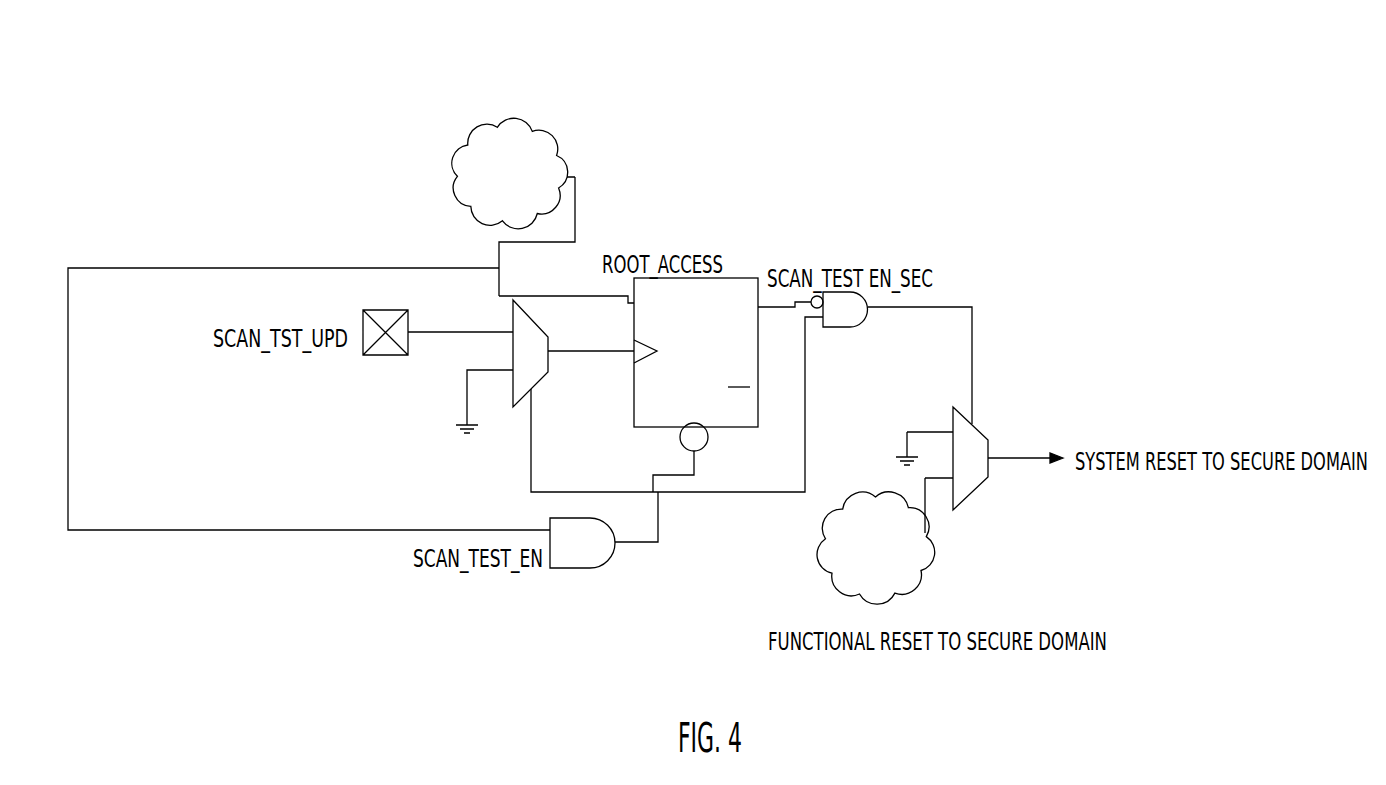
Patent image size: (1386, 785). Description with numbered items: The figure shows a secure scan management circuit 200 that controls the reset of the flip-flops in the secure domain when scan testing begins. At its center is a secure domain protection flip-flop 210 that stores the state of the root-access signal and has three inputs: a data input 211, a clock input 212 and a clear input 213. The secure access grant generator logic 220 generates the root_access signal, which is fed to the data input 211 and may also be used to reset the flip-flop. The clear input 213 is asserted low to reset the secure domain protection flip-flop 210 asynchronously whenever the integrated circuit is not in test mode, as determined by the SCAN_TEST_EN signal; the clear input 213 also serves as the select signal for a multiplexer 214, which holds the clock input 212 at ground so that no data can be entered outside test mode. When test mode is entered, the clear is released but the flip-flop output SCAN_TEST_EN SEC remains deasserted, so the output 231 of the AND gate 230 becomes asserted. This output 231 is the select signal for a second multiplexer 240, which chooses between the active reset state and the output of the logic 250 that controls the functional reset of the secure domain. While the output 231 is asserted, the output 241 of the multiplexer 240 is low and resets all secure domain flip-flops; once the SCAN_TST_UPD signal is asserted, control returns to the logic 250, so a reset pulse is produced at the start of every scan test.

The secure scan management circuit 200 is at (197, 128).
The secure domain protection flip-flop 210 is at (742, 277).
The data input 211 is at (598, 296).
The clock input 212 is at (600, 352).
The clear input 213 is at (694, 463).
The multiplexer 214 is at (515, 404).
The secure access grant generator logic 220 is at (556, 163).
The AND gate 230 is at (847, 327).
The output 231 is at (972, 336).
The multiplexer 240 is at (988, 445).
The output 241 is at (1023, 458).
The logic 250 is at (910, 583).